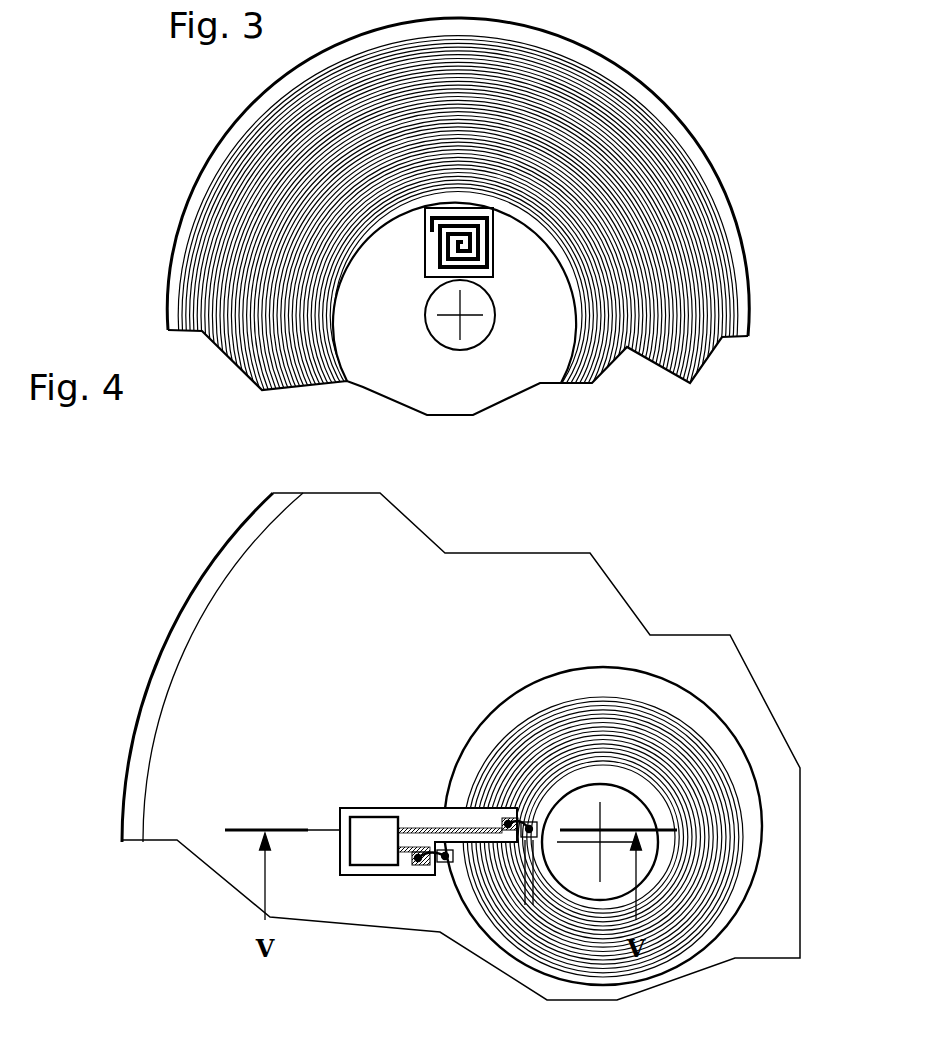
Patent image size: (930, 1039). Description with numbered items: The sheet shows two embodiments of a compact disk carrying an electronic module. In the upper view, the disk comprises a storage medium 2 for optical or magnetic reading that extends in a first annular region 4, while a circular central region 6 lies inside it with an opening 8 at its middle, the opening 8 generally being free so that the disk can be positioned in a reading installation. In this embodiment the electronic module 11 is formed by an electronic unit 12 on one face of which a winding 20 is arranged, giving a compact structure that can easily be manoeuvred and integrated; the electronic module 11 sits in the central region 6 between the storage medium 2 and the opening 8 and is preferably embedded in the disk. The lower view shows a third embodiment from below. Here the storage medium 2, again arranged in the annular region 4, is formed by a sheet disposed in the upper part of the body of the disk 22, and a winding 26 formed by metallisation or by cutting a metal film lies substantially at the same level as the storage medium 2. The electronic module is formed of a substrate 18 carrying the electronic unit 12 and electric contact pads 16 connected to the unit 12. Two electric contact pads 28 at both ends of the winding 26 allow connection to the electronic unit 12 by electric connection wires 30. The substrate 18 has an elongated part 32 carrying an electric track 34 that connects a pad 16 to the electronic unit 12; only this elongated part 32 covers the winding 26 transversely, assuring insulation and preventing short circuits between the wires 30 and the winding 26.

In FIG. 3, the storage medium 2 is at (553, 153).
In FIG. 4, the storage medium 2 is at (313, 755).
In FIG. 3, the annular region 4 is at (712, 168).
In FIG. 4, the annular region 4 is at (188, 618).
In FIG. 3, the central region 6 is at (393, 308).
In FIG. 3, the opening 8 is at (467, 322).
In FIG. 3, the electronic module 11 is at (459, 305).
In FIG. 3, the electronic unit 12 is at (493, 257).
In FIG. 4, the electronic unit 12 is at (373, 840).
In FIG. 3, the winding 20 is at (493, 243).
In FIG. 4, the disk 22 is at (258, 520).
In FIG. 4, the winding 26 is at (647, 742).
In FIG. 4, the substrate 18 is at (433, 808).
In FIG. 4, the electric track 34 is at (418, 830).
In FIG. 4, the elongated part 32 is at (443, 818).
In FIG. 4, the electric contact pads 16 is at (472, 805).
In FIG. 4, the electric connection wires 30 is at (514, 818).
In FIG. 4, the electric contact pads 28 is at (530, 818).